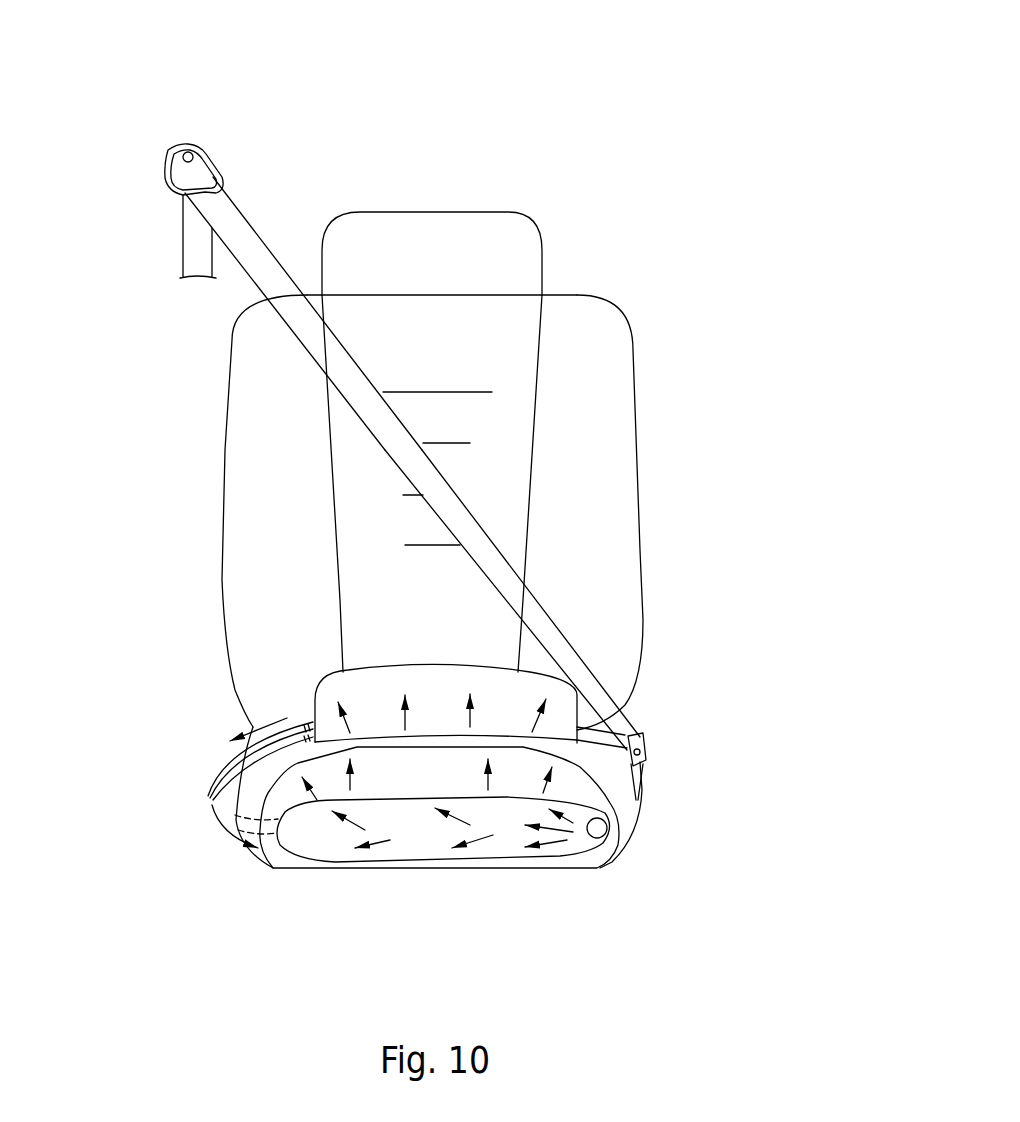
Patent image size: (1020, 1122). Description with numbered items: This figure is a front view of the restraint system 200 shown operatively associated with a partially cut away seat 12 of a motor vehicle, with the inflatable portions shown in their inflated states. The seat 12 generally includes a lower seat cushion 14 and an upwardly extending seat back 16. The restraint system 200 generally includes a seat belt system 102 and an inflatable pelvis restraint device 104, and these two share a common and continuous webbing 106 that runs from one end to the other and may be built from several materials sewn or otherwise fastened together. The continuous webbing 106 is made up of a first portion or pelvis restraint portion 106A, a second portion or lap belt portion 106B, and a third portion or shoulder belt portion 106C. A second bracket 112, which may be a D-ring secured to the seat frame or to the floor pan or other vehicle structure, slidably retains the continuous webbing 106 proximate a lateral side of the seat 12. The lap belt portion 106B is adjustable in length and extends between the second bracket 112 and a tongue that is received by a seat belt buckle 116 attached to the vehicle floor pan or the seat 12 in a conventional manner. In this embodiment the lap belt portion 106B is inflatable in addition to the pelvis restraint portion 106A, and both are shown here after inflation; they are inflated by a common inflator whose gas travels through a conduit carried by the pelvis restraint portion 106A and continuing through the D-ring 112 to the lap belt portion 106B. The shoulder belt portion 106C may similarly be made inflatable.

The restraint system 200 is at (598, 132).
The seat 12 is at (636, 417).
The lower seat cushion 14 is at (623, 815).
The seat back 16 is at (640, 545).
The seat belt system 102 is at (529, 517).
The inflatable pelvis restraint device 104 is at (390, 875).
The continuous webbing 106 is at (428, 462).
The pelvis restraint portion 106A is at (478, 862).
The lap belt portion 106B is at (397, 664).
The shoulder belt portion 106C is at (340, 378).
The second bracket 112 is at (210, 797).
The seat belt buckle 116 is at (645, 752).